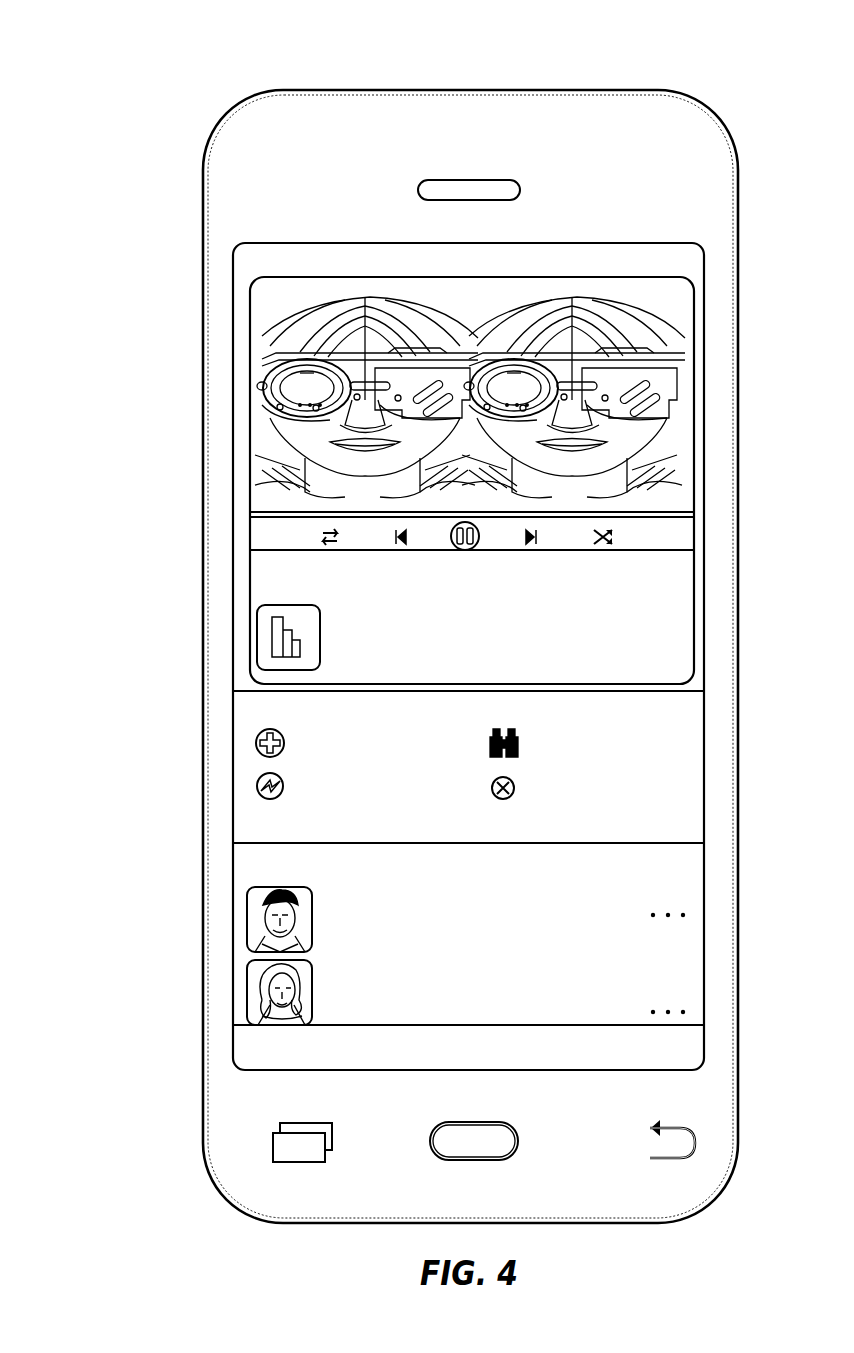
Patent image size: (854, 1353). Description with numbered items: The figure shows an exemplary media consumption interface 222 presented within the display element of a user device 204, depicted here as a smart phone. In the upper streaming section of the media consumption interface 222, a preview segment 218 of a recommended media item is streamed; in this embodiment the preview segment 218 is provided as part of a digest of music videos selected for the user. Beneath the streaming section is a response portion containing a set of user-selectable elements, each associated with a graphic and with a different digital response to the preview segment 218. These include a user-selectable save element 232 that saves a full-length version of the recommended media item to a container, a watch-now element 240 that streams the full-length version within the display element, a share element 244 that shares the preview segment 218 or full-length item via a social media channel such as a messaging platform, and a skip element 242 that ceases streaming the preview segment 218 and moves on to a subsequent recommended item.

The user device 204 is at (738, 232).
The media consumption interface 222 is at (128, 98).
The preview segment 218 is at (694, 486).
The user-selectable save element 232 is at (292, 730).
The watch-now element 240 is at (607, 730).
The share element 244 is at (326, 806).
The skip element 242 is at (560, 806).